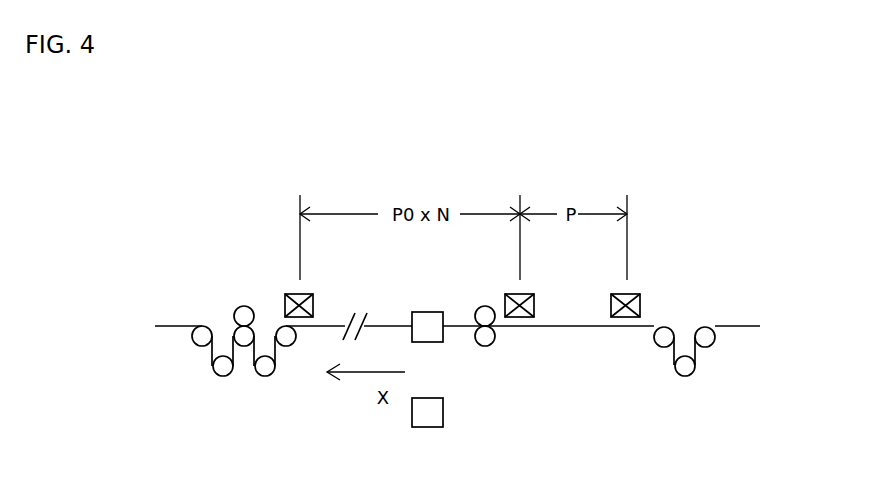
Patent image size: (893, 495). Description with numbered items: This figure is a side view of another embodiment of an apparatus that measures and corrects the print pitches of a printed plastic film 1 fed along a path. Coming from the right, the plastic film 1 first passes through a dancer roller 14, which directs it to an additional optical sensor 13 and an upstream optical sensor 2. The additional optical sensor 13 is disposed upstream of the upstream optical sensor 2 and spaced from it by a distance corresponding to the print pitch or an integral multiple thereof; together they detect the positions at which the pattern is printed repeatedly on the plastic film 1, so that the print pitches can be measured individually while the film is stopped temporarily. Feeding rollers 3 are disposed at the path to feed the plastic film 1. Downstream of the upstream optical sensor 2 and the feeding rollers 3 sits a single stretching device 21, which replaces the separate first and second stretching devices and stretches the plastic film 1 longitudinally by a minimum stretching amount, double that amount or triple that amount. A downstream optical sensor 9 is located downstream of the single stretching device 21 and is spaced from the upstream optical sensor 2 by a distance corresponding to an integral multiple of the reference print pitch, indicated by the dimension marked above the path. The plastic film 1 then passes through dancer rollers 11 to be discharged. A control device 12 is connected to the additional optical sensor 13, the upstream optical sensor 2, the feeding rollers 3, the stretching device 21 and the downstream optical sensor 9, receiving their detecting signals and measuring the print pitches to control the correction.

The plastic film 1 is at (557, 326).
The upstream optical sensor 2 is at (535, 310).
The feeding rollers 3 is at (475, 315).
The downstream optical sensor 9 is at (284, 306).
The dancer rollers 11 is at (269, 375).
The control device 12 is at (443, 412).
The additional optical sensor 13 is at (642, 305).
The dancer roller 14 is at (682, 376).
The single stretching device 21 is at (427, 312).